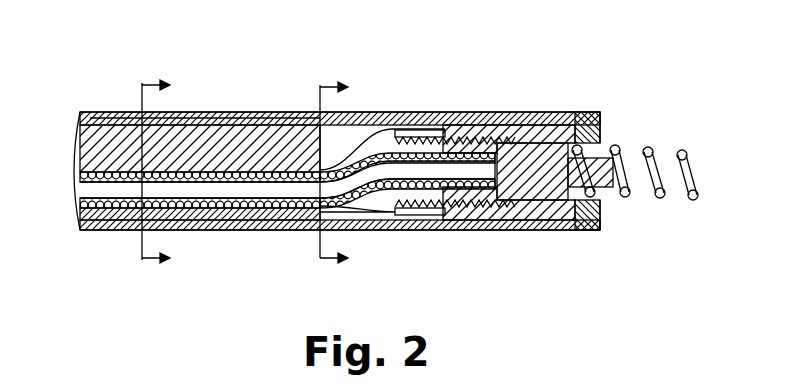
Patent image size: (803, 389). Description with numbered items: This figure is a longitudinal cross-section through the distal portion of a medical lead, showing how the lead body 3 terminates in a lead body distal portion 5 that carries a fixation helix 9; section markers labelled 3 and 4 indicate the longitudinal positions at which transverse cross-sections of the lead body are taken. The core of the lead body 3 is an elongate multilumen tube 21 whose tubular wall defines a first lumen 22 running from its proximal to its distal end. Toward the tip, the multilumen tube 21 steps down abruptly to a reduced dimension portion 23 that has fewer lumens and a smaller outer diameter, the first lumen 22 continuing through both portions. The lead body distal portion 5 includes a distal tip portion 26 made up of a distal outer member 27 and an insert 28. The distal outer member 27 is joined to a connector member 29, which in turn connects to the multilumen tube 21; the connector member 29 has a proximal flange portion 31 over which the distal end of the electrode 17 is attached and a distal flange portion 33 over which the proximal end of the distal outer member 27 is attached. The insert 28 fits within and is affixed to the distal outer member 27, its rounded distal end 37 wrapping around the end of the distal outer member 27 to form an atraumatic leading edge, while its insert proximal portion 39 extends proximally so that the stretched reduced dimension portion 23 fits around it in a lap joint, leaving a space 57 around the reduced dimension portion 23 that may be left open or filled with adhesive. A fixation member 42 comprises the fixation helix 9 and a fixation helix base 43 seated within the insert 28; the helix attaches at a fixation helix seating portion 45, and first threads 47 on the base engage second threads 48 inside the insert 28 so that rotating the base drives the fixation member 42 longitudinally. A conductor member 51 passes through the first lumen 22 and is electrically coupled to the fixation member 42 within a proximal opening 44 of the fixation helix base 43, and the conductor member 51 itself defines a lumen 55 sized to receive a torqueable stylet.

The lead body 3 is at (156, 172).
The section line 4- 4 is at (334, 173).
The lead body distal portion 5 is at (542, 110).
The fixation helix 9 is at (660, 148).
The electrode 17 is at (122, 112).
The multilumen tube 21 is at (100, 146).
The first lumen 22 is at (100, 170).
The reduced dimension portion 23 is at (365, 231).
The distal tip portion 26 is at (528, 82).
The distal outer member 27 is at (470, 231).
The insert 28 is at (538, 231).
The connector member 29 is at (240, 112).
The proximal flange portion 31 is at (185, 231).
The distal flange portion 33 is at (280, 231).
The distal end 37 is at (602, 220).
The insert proximal portion 39 is at (395, 140).
The fixation member 42 is at (624, 140).
The fixation helix base 43 is at (575, 231).
The proximal opening 44 is at (481, 114).
The fixation helix seating portion 45 is at (602, 148).
The first threads 47 is at (513, 231).
The second threads 48 is at (425, 232).
The conductor member 51 is at (116, 231).
The lumen 55 is at (92, 190).
The space 57 is at (345, 137).